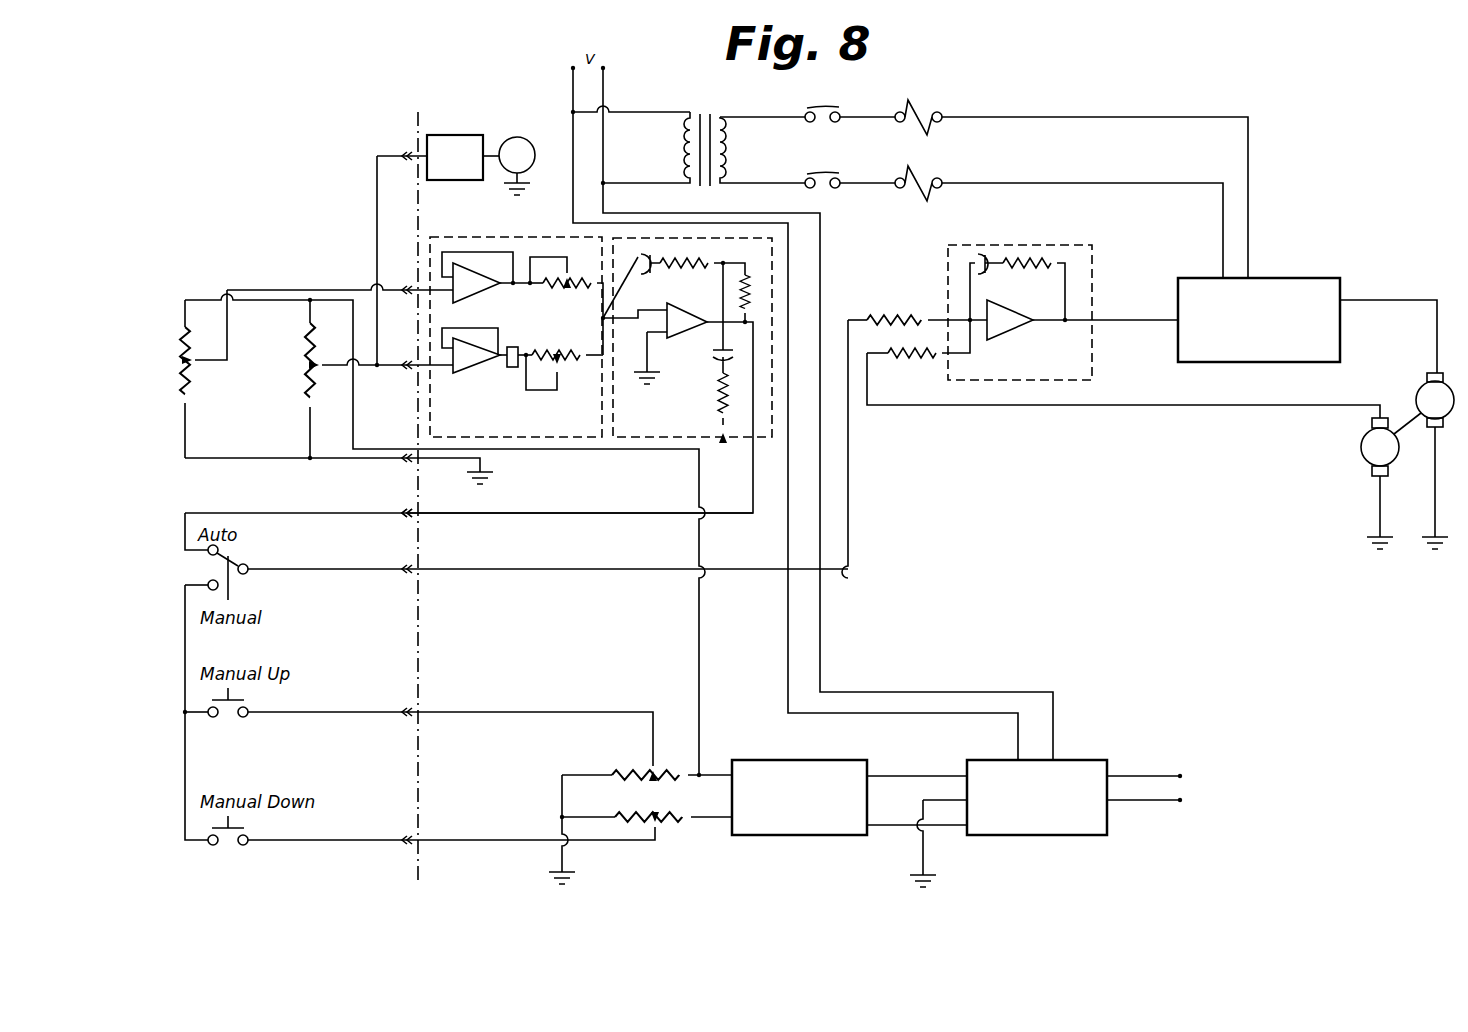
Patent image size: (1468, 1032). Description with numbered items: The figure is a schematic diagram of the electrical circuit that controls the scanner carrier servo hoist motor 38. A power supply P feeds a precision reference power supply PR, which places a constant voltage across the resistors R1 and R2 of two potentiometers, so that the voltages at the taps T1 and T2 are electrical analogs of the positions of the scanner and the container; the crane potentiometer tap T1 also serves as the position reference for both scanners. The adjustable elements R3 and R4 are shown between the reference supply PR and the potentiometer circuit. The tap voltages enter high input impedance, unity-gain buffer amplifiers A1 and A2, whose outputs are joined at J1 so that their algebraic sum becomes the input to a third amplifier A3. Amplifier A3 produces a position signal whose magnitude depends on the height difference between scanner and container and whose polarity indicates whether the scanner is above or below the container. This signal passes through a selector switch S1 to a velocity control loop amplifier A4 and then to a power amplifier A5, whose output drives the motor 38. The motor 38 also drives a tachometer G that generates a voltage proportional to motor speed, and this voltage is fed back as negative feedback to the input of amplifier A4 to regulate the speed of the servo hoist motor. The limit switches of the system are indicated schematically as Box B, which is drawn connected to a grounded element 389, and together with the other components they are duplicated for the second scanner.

The box B is at (459, 146).
The meter 389 is at (522, 137).
The resistor R1 is at (300, 341).
The resistor R2 is at (183, 327).
The tap T1 is at (325, 372).
The tap T2 is at (205, 367).
The buffer amplifier A1 is at (466, 368).
The buffer amplifier A2 is at (478, 284).
The third amplifier A3 is at (681, 344).
The velocity control loop amplifier A4 is at (998, 314).
The power amplifier A5 is at (1262, 333).
The junction J1 is at (601, 318).
The selector switch S1 is at (240, 556).
The potentiometer R3 is at (621, 768).
The potentiometer R4 is at (666, 830).
The precision reference power supply PR is at (777, 826).
The power supply P is at (1035, 822).
The tachometer G is at (1360, 447).
The scanner carrier servo hoist motor 38 is at (1421, 386).